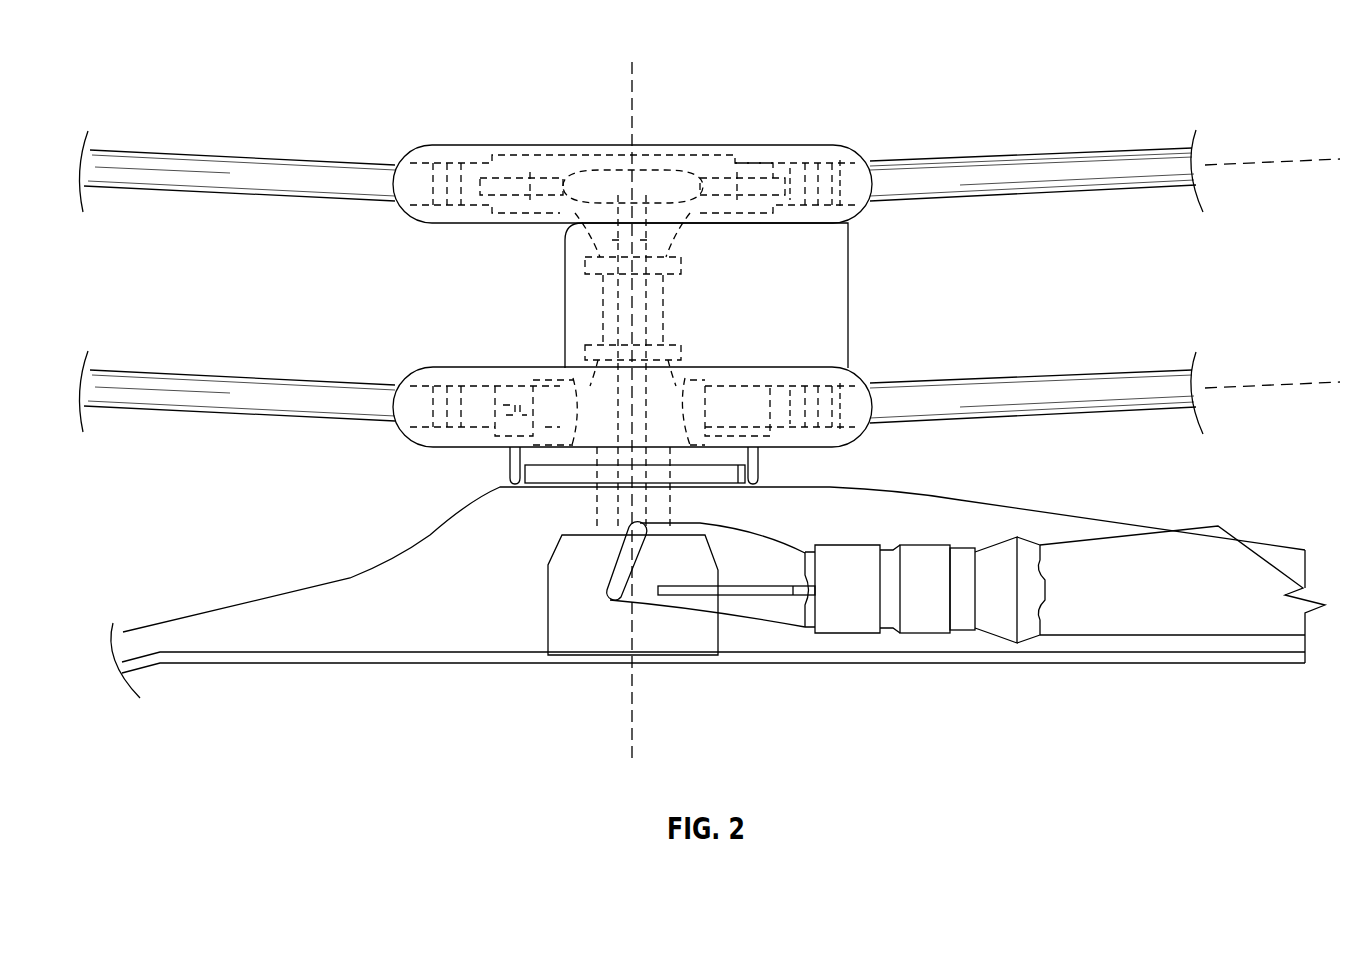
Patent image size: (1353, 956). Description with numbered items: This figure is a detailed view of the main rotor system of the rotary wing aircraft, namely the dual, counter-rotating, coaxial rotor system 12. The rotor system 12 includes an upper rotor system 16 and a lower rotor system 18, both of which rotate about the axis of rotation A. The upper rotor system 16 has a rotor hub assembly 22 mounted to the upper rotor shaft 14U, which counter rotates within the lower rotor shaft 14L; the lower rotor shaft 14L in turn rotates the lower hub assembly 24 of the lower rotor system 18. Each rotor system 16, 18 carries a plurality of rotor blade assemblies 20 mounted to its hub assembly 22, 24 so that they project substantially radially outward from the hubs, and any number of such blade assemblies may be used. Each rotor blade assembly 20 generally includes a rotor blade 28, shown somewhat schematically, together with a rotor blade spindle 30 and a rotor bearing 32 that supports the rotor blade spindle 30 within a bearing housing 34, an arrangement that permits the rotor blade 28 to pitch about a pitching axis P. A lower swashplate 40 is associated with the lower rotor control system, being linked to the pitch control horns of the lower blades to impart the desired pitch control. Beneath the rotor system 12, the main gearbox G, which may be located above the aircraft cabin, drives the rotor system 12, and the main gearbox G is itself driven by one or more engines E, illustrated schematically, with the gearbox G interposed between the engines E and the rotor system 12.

The axis of rotation A is at (628, 100).
The dual, counter-rotating, coaxial rotor system 12 is at (407, 462).
The upper rotor shaft 14U is at (610, 300).
The lower rotor shaft 14L is at (600, 320).
The upper rotor system 16 is at (868, 145).
The lower rotor system 18 is at (868, 372).
The rotor blade assembly 20 is at (1075, 173).
The rotor hub assembly 22 is at (655, 158).
The lower hub assembly 24 is at (700, 444).
The rotor blade 28 is at (1048, 168).
The rotor blade spindle 30 is at (846, 160).
The rotor bearing 32 is at (810, 165).
The bearing housing 34 is at (752, 168).
The lower swashplate 40 is at (552, 472).
The pitching axis P is at (1256, 166).
The main gearbox G is at (595, 640).
The engine E is at (850, 640).